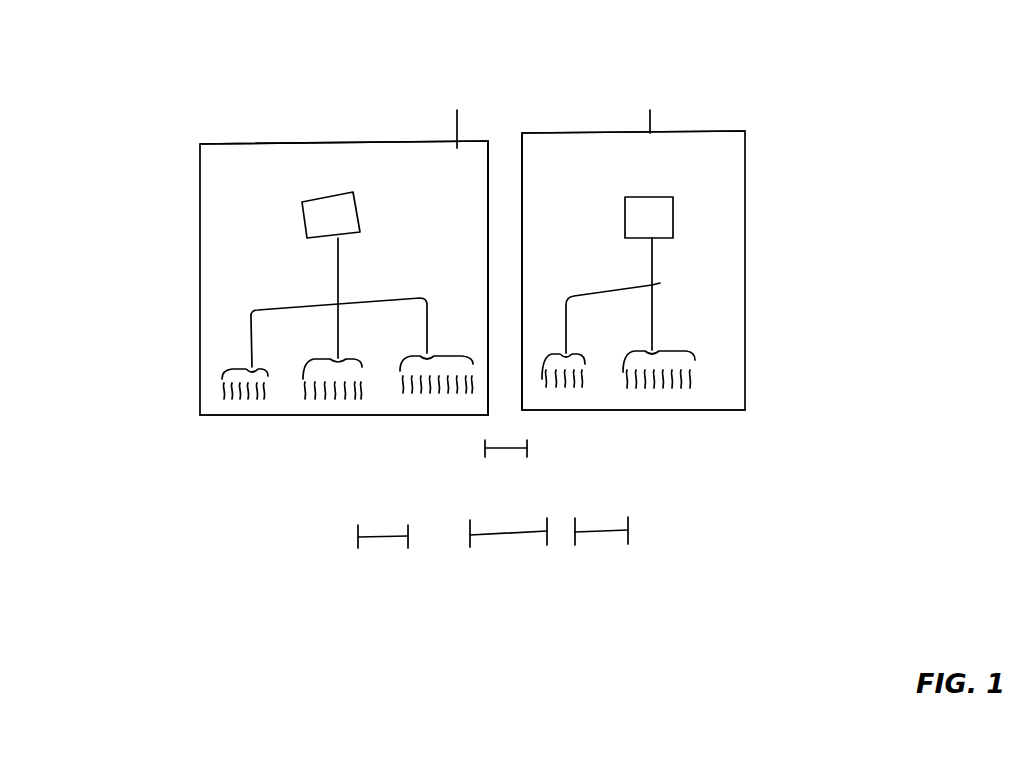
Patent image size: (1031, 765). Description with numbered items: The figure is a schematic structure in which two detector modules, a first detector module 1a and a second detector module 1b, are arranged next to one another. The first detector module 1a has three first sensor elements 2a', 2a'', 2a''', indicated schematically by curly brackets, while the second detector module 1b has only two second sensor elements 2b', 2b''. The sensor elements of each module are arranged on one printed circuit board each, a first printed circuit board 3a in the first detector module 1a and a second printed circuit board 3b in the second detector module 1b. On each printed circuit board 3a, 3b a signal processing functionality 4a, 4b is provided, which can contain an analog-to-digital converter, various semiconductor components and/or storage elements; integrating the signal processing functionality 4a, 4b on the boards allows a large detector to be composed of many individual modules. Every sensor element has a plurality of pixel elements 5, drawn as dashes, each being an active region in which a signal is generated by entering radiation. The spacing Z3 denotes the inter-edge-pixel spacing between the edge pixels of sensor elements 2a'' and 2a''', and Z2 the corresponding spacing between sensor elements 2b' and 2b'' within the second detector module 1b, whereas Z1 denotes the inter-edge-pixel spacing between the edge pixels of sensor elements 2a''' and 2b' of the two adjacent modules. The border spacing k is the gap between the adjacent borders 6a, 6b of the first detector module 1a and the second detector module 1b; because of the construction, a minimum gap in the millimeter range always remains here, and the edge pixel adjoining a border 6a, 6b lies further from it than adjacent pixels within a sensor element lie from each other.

The first detector module 1a is at (200, 262).
The second detector module 1b is at (745, 245).
The first sensor element 2a' is at (226, 436).
The first sensor element 2a'' is at (320, 428).
The first sensor element 2a''' is at (428, 423).
The second sensor element 2b' is at (573, 410).
The second sensor element 2b'' is at (665, 408).
The first printed circuit board 3a is at (367, 143).
The second printed circuit board 3b is at (563, 133).
The signal processing functionality 4a is at (323, 200).
The signal processing functionality 4b is at (673, 190).
The pixel elements 5 is at (357, 415).
The border 6a is at (488, 160).
The border 6b is at (523, 160).
The border spacing k is at (506, 463).
The inter-edge-pixel spacing between adjacent sensor elements of two adjacent detect Z1 is at (508, 554).
The inter-edge-pixel spacing between adjacent sensor elements within a detector modu Z2 is at (601, 554).
The inter-edge-pixel spacing between adjacent sensor elements within a detector modu Z3 is at (383, 561).